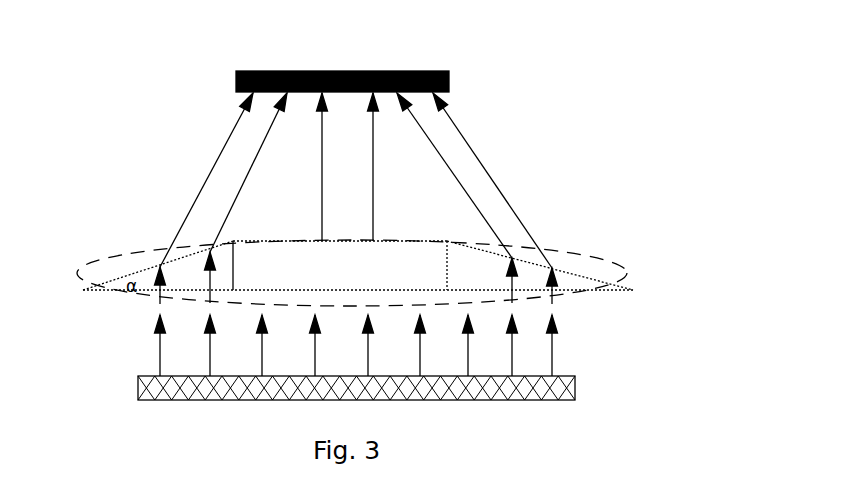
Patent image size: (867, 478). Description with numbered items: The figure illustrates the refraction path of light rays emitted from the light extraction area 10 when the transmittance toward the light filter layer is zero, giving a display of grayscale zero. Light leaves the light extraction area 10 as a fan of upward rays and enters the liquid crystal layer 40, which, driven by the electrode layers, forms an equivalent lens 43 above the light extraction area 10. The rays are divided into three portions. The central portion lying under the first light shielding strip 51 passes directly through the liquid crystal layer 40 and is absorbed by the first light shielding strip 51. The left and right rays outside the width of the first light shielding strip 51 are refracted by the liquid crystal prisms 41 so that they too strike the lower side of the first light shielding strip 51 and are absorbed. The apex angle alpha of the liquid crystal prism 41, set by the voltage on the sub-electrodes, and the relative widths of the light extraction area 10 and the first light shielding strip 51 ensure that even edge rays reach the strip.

The light extraction area 10 is at (150, 386).
The liquid crystal layer 40 is at (358, 265).
The liquid crystal prism 41 is at (577, 281).
The equivalent lens 43 is at (95, 263).
The first light shielding strip 51 is at (449, 82).